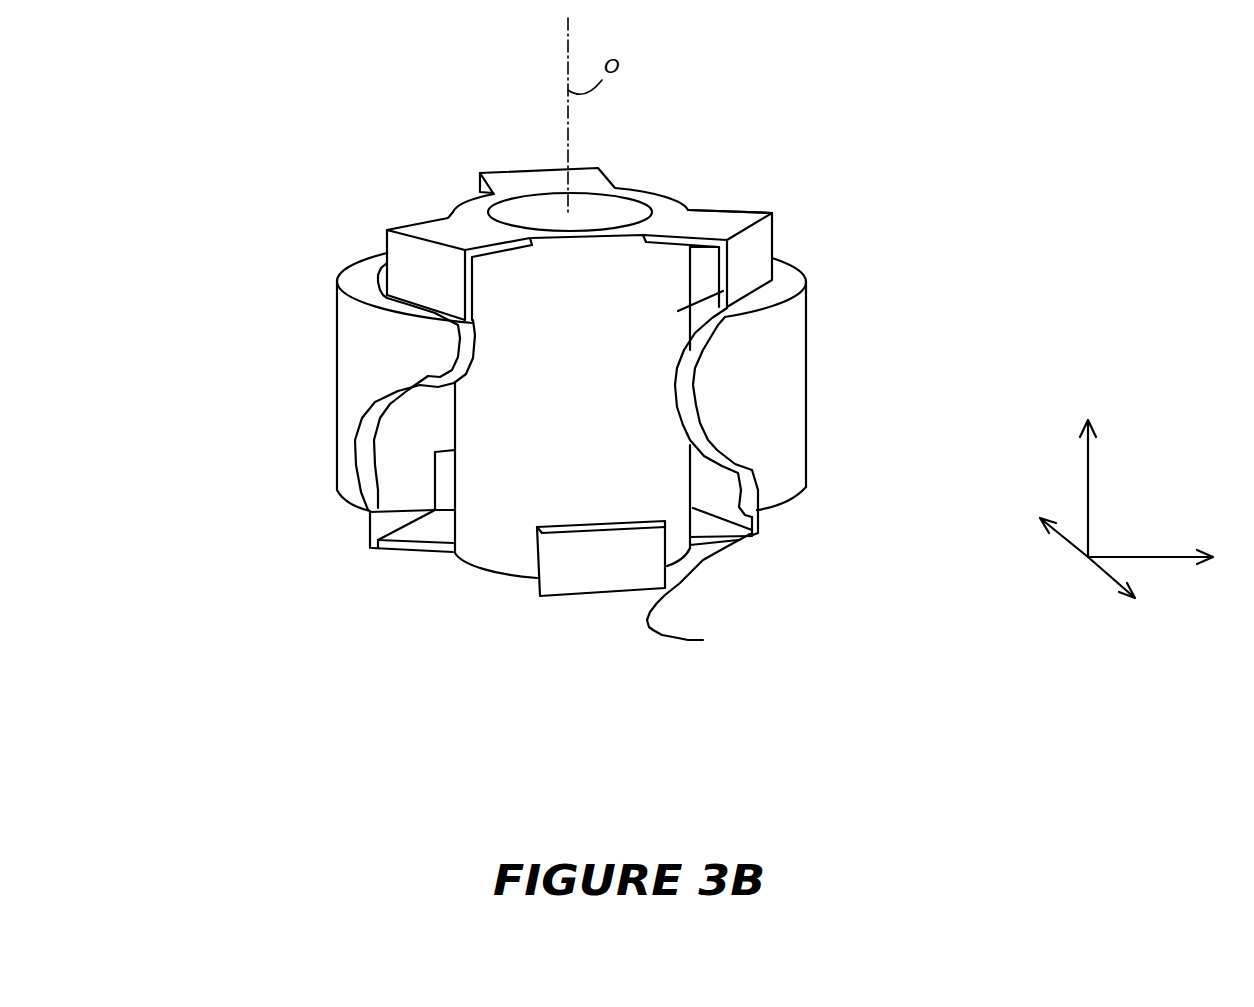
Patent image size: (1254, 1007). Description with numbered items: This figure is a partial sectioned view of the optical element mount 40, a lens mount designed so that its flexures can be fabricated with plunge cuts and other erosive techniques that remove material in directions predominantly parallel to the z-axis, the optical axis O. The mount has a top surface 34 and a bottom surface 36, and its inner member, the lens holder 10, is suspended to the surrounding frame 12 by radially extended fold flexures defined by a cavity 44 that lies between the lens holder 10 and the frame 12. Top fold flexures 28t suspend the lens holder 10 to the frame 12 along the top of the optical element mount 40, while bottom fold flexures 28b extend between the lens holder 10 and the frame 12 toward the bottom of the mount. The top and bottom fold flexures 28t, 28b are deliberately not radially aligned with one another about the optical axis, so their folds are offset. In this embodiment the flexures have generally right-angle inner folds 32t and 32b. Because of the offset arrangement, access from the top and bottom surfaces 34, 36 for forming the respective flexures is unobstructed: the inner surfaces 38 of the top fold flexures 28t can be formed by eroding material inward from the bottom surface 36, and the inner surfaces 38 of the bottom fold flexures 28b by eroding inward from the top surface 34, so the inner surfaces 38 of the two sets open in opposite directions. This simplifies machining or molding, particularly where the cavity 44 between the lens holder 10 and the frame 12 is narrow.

The lens holder 10 is at (480, 173).
The frame 12 is at (459, 387).
The top fold flexures 28t is at (772, 242).
The bottom fold flexures 28b is at (573, 578).
The inner fold of top fold flexure 32t is at (742, 230).
The inner fold of bottom fold flexure 32b is at (403, 527).
The top surface 34 is at (340, 278).
The bottom surface 36 is at (372, 547).
The inner surfaces 38 is at (395, 500).
The optical element mount 40 is at (1093, 126).
The cavity 44 is at (775, 253).